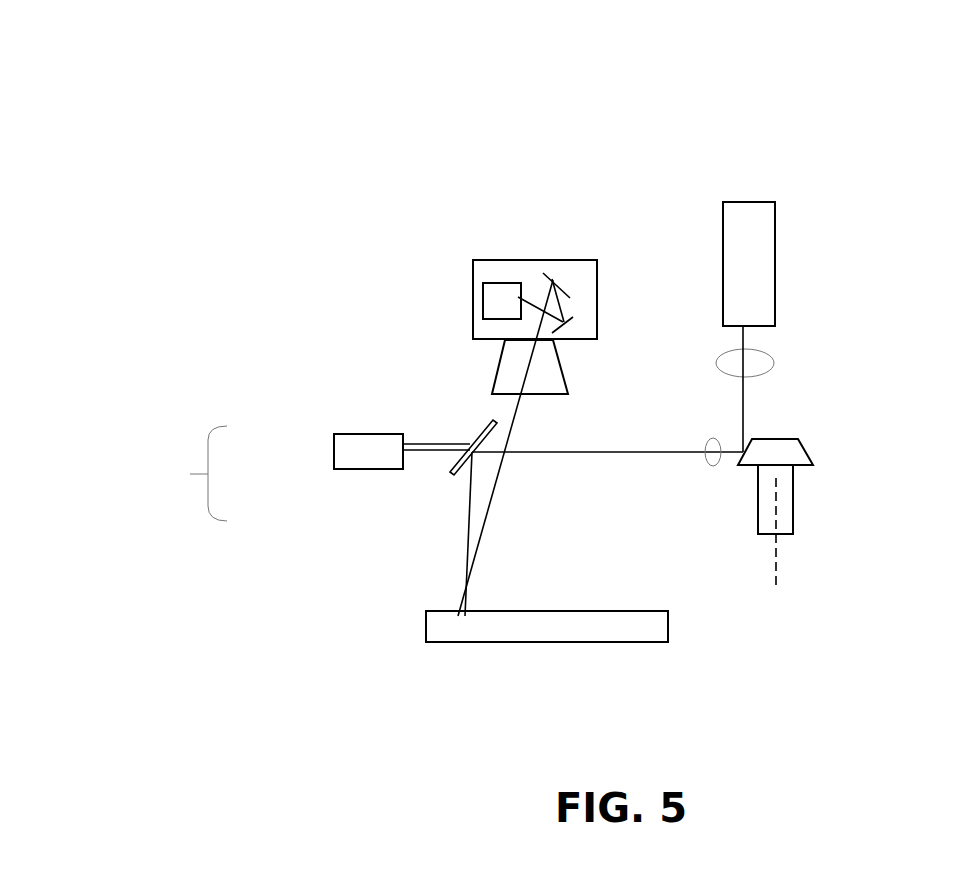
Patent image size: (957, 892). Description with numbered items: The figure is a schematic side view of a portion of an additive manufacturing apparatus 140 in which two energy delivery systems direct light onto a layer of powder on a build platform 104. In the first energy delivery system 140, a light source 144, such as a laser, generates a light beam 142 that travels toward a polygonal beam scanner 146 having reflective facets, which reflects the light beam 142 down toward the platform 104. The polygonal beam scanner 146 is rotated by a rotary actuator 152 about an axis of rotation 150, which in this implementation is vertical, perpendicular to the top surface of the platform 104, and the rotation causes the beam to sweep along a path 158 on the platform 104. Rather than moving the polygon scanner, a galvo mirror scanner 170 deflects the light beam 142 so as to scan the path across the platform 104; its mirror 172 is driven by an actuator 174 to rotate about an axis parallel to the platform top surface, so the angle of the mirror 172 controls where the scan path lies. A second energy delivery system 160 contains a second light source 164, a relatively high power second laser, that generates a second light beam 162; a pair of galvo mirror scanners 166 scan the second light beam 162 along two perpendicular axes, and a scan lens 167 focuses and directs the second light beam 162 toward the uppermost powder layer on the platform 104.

The first energy delivery system 140 is at (805, 88).
The light source 144 is at (755, 212).
The path 158 is at (768, 368).
The light beam 142 is at (601, 452).
The polygonal beam scanner 146 is at (807, 452).
The rotary actuator 152 is at (795, 516).
The axis of rotation 150 is at (777, 563).
The second energy delivery system 160 is at (447, 319).
The second light source 164 is at (498, 305).
The galvo mirror scanners 166 is at (565, 322).
The scan lens 167 is at (493, 367).
The second light beam 162 is at (487, 513).
The galvo mirror scanner 170 is at (184, 473).
The actuator 174 is at (334, 461).
The mirror 172 is at (452, 473).
The platform 104 is at (573, 628).